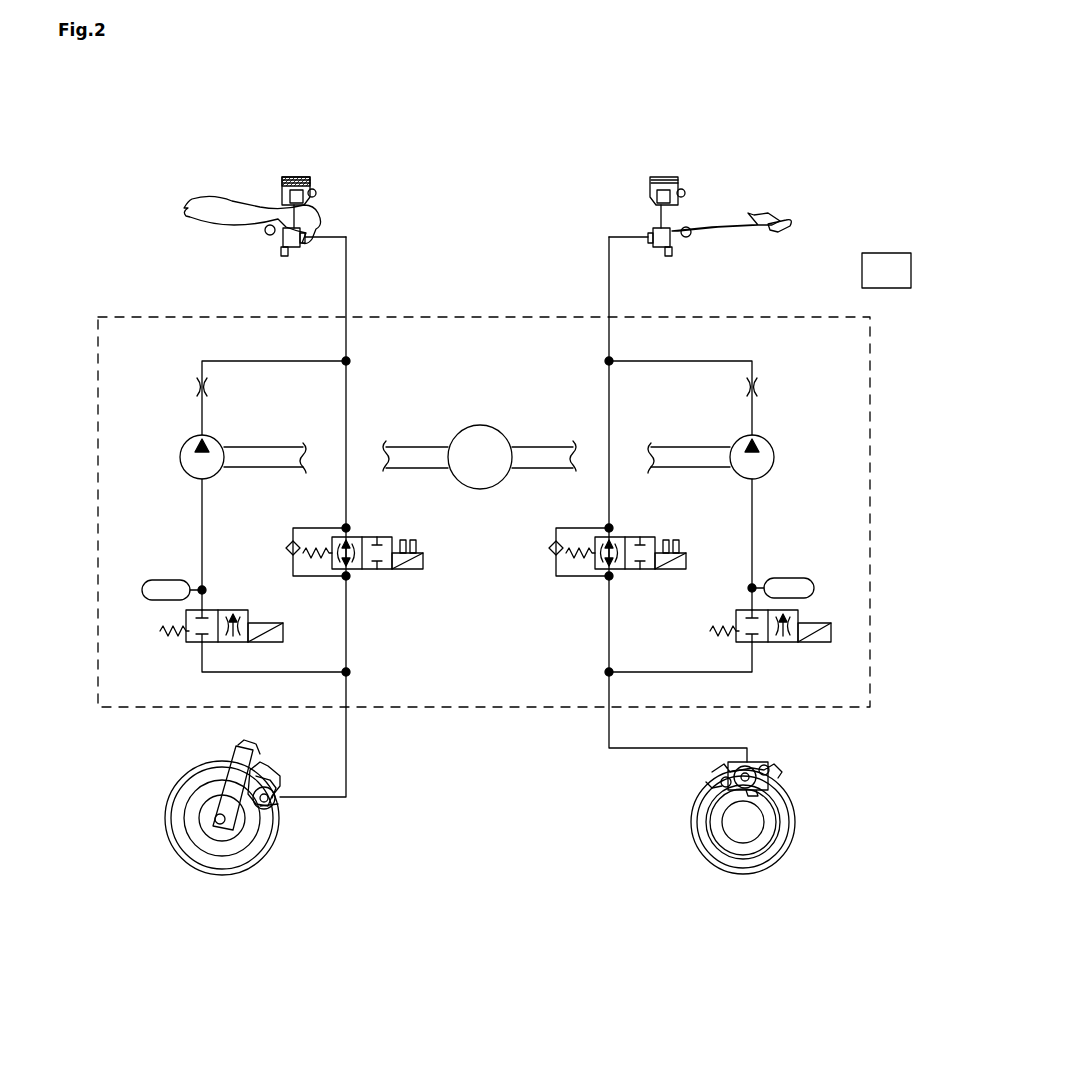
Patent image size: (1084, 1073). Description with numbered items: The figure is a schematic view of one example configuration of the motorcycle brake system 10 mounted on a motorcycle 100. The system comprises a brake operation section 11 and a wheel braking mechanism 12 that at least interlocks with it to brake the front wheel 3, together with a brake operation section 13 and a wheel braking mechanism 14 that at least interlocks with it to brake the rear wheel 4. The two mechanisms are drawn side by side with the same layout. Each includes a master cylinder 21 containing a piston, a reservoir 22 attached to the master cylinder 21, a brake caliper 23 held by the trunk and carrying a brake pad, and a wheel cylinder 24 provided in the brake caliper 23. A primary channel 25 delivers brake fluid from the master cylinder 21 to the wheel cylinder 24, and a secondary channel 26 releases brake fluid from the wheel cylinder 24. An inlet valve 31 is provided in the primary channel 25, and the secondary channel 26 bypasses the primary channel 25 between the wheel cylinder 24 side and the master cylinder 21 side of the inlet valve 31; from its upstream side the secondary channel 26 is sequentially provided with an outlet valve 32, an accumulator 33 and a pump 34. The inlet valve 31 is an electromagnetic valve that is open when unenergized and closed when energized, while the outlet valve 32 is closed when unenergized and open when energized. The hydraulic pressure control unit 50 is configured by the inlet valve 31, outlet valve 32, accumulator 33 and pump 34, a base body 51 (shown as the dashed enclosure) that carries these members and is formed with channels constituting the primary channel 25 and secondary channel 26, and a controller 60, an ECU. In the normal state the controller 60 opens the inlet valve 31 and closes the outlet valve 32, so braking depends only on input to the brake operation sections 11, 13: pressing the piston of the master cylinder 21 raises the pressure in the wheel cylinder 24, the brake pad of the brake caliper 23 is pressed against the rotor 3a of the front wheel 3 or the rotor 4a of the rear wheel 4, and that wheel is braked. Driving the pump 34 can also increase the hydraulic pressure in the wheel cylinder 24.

The motorcycle 100 is at (896, 95).
The motorcycle brake system 10 is at (113, 210).
The brake operation section 11 is at (203, 212).
The wheel braking mechanism 12 is at (380, 162).
The brake operation section 13 is at (768, 213).
The wheel braking mechanism 14 is at (558, 162).
The master cylinder 21 is at (292, 250).
The reservoir 22 is at (302, 178).
The brake caliper 23 is at (264, 779).
The wheel cylinder 24 is at (272, 795).
The primary channel 25 is at (348, 393).
The secondary channel 26 is at (270, 362).
The inlet valve 31 is at (384, 570).
The outlet valve 32 is at (240, 609).
The accumulator 33 is at (168, 580).
The pump 34 is at (214, 480).
The hydraulic pressure control unit 50 is at (845, 238).
The base body 51 is at (150, 317).
The controller 60 is at (896, 247).
The front wheel 3 is at (238, 818).
The rotor 3a is at (194, 840).
The rear wheel 4 is at (728, 836).
The rotor 4a is at (774, 850).